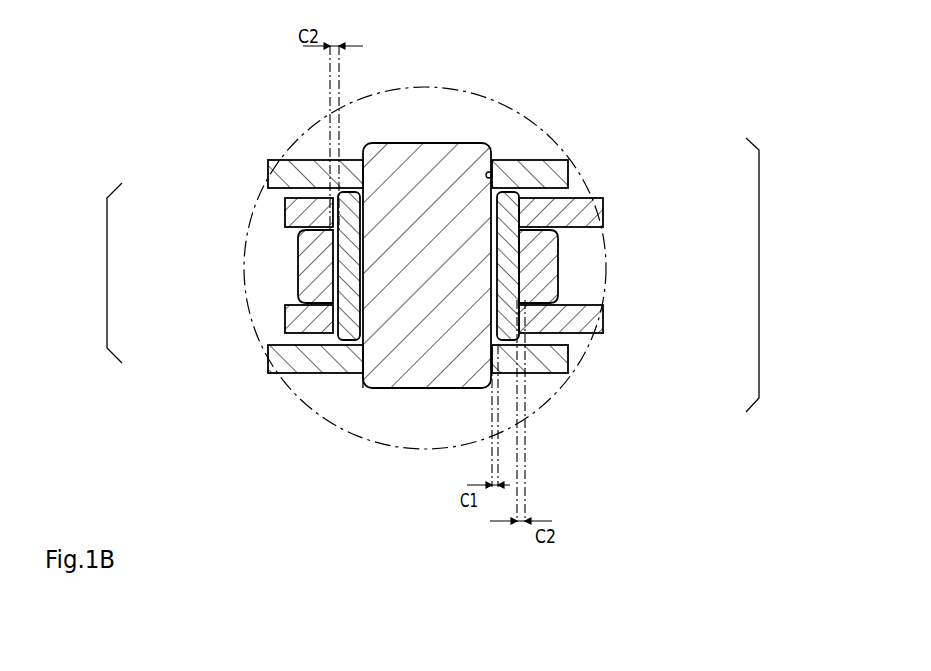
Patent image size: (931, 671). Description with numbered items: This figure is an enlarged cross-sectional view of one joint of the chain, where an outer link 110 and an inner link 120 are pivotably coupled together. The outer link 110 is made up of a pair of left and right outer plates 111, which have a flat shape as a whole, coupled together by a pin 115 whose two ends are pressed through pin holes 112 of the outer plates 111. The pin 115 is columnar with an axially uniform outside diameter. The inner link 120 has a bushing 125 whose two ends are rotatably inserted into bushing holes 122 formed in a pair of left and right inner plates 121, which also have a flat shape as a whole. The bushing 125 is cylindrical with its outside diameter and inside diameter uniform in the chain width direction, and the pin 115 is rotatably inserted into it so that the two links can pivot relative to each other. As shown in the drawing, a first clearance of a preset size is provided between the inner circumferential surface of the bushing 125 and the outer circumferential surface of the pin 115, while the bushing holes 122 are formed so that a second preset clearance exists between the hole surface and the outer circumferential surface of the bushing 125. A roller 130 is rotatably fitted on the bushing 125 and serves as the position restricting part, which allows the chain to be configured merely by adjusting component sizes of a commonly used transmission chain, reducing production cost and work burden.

The outer link 110 is at (773, 275).
The outer plate 111 is at (568, 172).
The pin hole 112 is at (492, 172).
The pin 115 is at (467, 260).
The inner link 120 is at (97, 273).
The inner plate 121 is at (290, 210).
The bushing hole 122 is at (515, 191).
The bushing 125 is at (298, 258).
The roller 130 is at (543, 280).